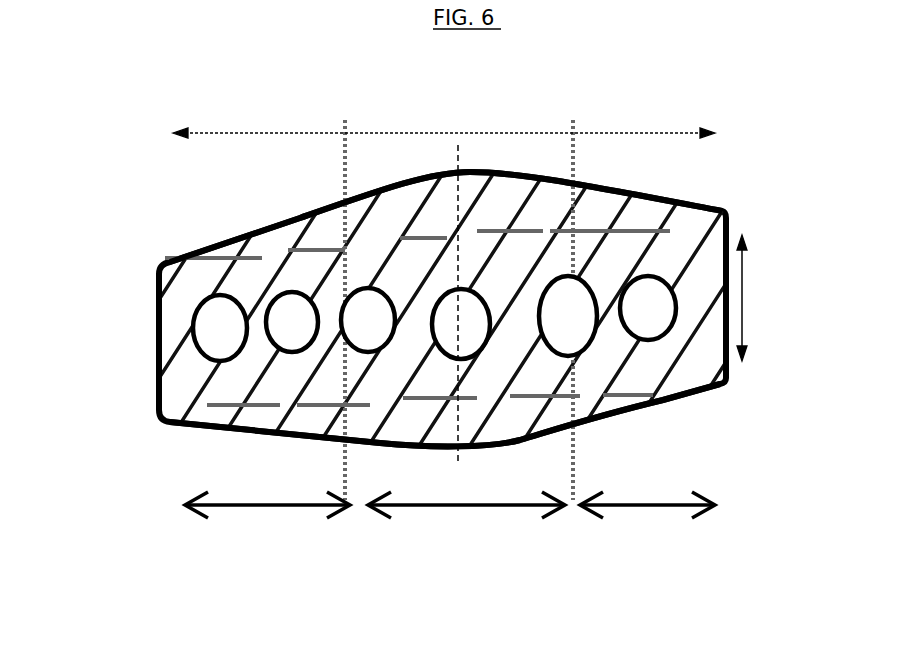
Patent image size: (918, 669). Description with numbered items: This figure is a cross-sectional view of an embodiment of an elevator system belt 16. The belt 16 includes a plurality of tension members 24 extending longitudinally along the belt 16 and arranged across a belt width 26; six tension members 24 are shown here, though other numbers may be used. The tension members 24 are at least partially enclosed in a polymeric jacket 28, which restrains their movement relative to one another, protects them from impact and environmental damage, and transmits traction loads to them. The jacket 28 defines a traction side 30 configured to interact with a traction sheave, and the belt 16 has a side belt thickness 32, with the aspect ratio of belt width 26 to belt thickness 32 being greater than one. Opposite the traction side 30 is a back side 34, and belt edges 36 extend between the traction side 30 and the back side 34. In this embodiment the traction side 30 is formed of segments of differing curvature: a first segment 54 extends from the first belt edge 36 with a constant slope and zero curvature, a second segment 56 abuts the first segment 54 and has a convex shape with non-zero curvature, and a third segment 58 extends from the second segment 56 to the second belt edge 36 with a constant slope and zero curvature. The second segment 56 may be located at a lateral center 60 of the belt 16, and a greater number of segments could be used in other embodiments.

The belt 16 is at (122, 96).
The tension members 24 is at (340, 320).
The belt width 26 is at (345, 133).
The polymeric jacket 28 is at (178, 376).
The traction side 30 is at (378, 442).
The belt thickness 32 is at (742, 300).
The back side 34 is at (660, 200).
The belt edges 36 is at (152, 322).
The first segment 54 is at (267, 525).
The second segment 56 is at (466, 522).
The third segment 58 is at (647, 522).
The lateral center 60 is at (458, 215).